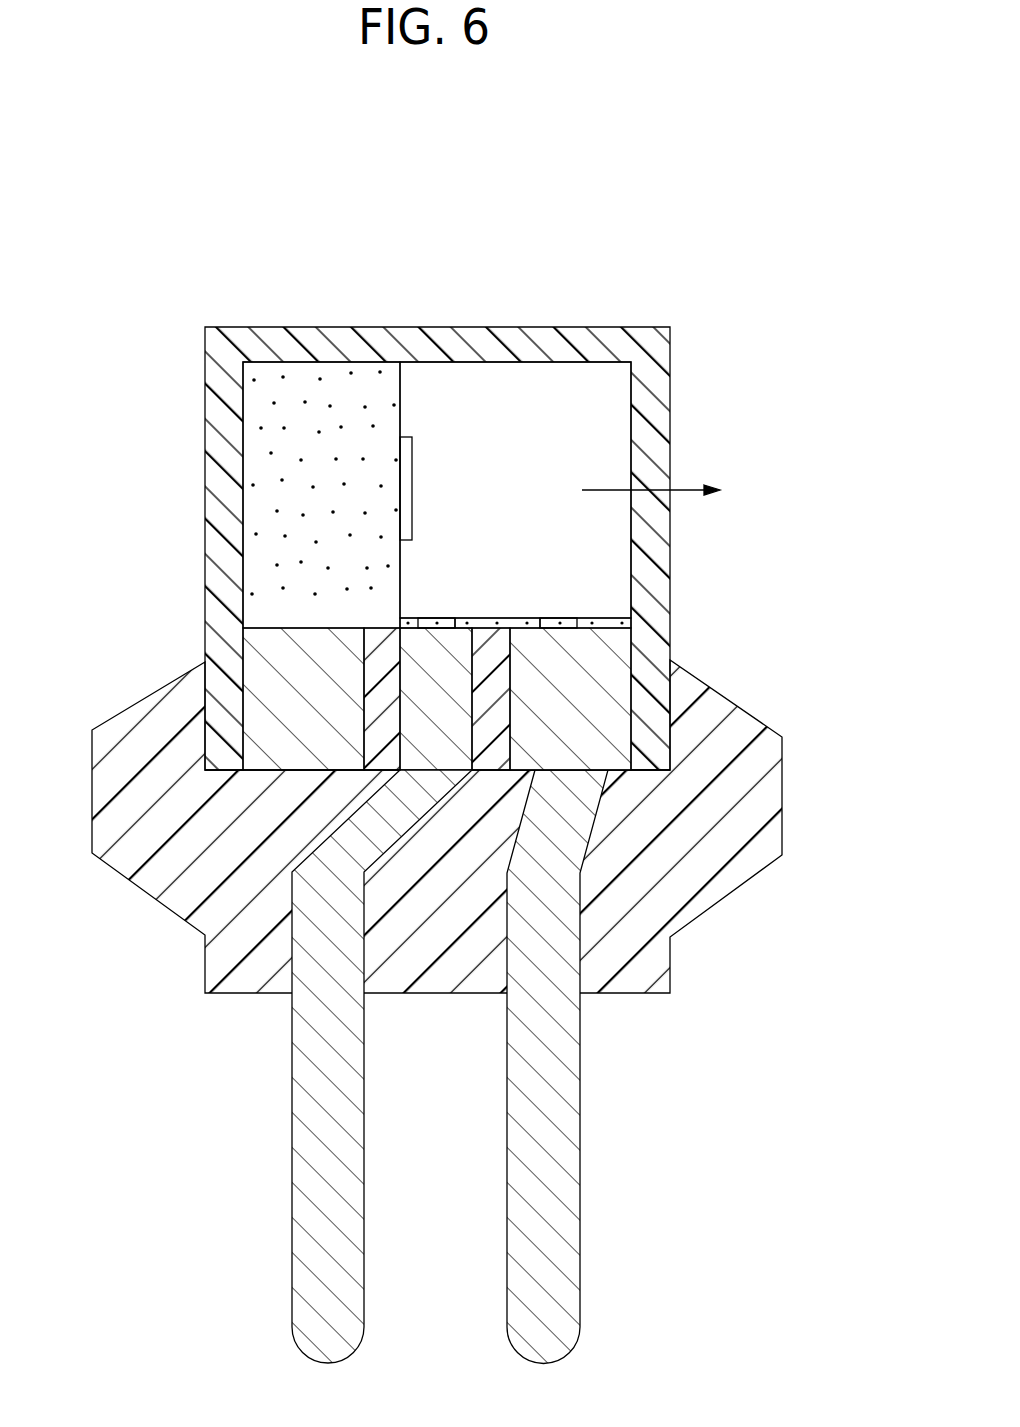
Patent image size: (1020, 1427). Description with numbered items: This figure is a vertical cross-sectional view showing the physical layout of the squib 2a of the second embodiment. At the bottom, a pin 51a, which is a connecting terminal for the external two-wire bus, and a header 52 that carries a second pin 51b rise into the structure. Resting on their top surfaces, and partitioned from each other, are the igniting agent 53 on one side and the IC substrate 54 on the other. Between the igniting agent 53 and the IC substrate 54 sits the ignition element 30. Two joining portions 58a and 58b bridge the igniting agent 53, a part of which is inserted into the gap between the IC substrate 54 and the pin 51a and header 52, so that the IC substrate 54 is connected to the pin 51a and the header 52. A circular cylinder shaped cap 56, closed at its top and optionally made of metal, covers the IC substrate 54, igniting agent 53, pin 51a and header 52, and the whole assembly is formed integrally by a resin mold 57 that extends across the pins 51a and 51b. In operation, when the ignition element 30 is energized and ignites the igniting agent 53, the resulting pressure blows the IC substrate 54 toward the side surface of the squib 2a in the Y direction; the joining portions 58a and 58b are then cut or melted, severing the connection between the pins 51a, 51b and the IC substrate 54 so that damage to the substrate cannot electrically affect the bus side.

The squib 2a is at (586, 222).
The ignition element 30 is at (415, 476).
The pin 51a is at (327, 1210).
The pin 51b is at (557, 1211).
The header 52 is at (278, 651).
The igniting agent 53 is at (260, 586).
The IC substrate 54 is at (595, 395).
The cap 56 is at (228, 421).
The resin mold 57 is at (185, 882).
The joining portion 58a is at (448, 618).
The joining portion 58b is at (556, 618).